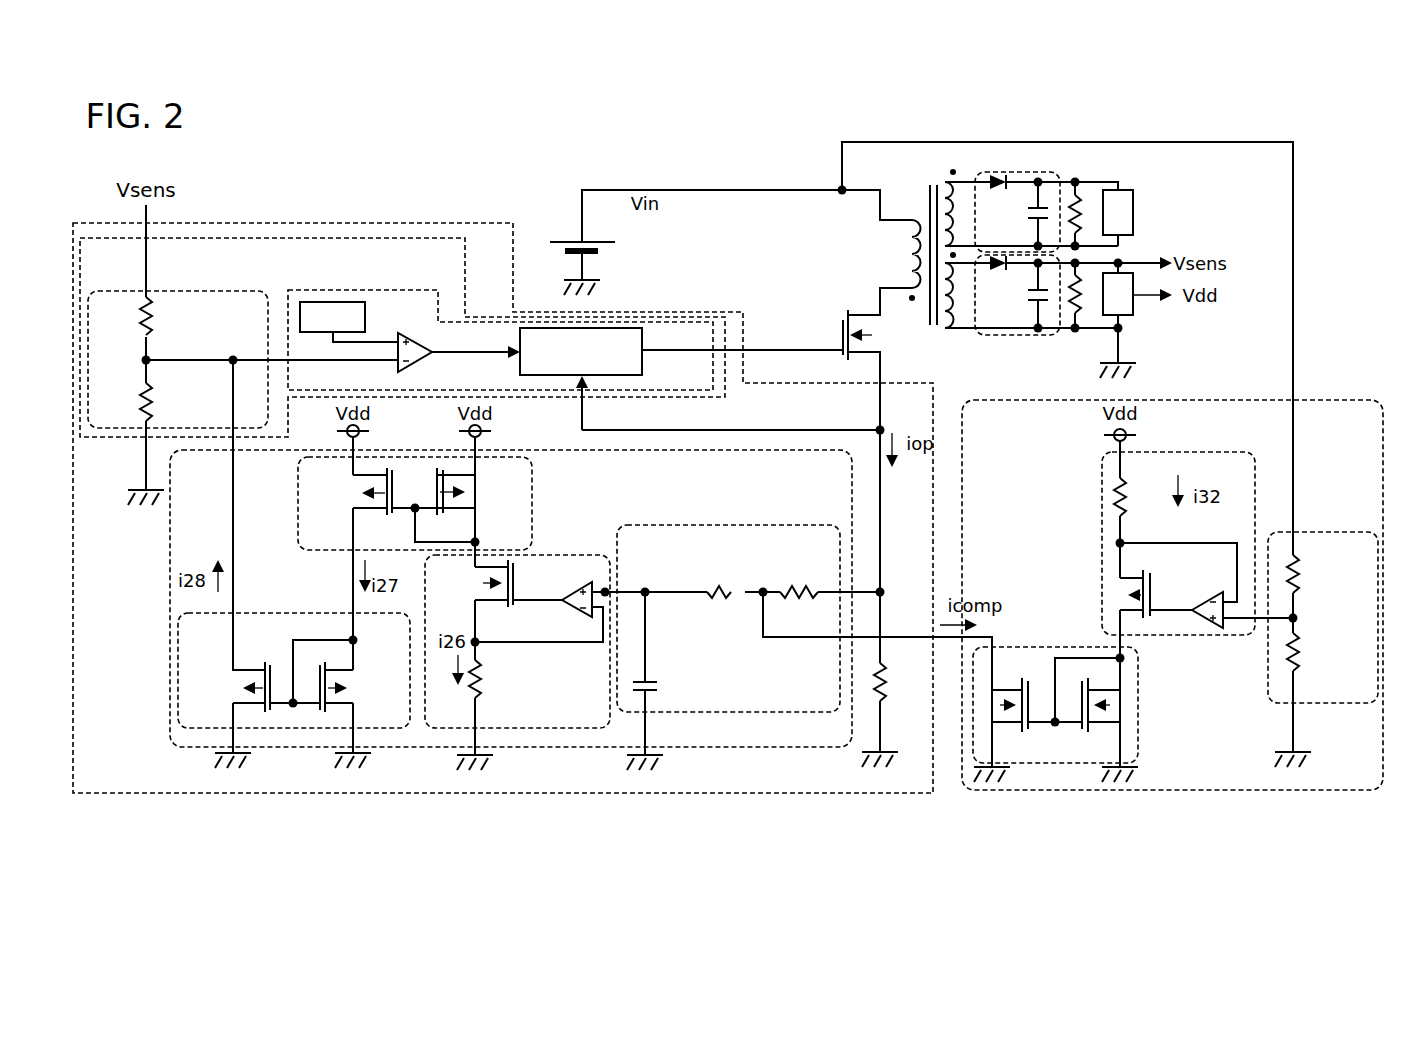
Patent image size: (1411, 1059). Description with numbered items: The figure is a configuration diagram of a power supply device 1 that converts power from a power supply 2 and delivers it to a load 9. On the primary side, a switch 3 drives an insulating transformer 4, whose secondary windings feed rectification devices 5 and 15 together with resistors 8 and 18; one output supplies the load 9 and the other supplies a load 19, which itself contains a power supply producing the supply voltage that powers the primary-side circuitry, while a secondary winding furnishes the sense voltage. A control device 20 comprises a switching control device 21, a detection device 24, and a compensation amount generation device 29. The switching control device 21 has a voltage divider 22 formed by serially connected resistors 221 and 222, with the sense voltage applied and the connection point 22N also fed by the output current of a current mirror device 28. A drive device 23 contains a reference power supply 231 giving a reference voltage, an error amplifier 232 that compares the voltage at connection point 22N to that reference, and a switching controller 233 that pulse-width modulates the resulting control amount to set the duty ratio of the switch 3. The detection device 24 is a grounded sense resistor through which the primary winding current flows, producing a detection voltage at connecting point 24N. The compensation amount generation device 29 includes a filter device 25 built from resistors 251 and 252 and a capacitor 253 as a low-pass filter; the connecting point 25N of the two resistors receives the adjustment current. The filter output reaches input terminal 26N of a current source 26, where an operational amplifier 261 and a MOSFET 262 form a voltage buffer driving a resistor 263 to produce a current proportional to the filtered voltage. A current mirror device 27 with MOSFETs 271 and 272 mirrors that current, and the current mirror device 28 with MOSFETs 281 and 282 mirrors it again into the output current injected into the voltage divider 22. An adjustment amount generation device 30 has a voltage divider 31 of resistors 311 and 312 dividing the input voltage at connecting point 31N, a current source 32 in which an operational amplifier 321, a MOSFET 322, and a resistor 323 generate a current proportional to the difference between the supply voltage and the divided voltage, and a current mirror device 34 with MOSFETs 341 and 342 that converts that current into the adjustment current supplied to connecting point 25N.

The power supply device 1 is at (606, 106).
The power supply 2 is at (568, 241).
The switch 3 is at (841, 332).
The insulating transformer 4 is at (899, 246).
The rectification device 5 is at (1010, 175).
The resistor 8 is at (1080, 208).
The load 9 is at (1134, 203).
The rectification device 15 is at (1010, 336).
The resistor 18 is at (1082, 316).
The load 19 is at (1134, 316).
The control device 20 is at (316, 223).
The switching control device 21 is at (487, 316).
The voltage divider 22 is at (180, 291).
The resistor 221 is at (142, 316).
The resistor 222 is at (140, 422).
The connection point 22N is at (231, 358).
The drive device 23 is at (385, 290).
The reference power supply 231 is at (366, 318).
The error amplifier 232 is at (438, 362).
The switching controller 233 is at (642, 370).
The detection device 24 is at (886, 703).
The connecting point 24N is at (884, 589).
The filter device 25 is at (640, 525).
The resistor 251 is at (800, 598).
The resistor 252 is at (729, 598).
The capacitor 253 is at (652, 680).
The connecting point 25N is at (764, 588).
The current source 26 is at (548, 553).
The operational amplifier 261 is at (580, 614).
The MOSFET 262 is at (480, 575).
The resistor 263 is at (482, 700).
The input terminal 26N is at (603, 589).
The current mirror device 27 is at (532, 465).
The MOSFET 271 is at (468, 493).
The MOSFET 272 is at (362, 490).
The current mirror device 28 is at (272, 612).
The MOSFET 281 is at (343, 682).
The MOSFET 282 is at (242, 684).
The compensation amount generation device 29 is at (170, 735).
The adjustment amount generation device 30 is at (1345, 400).
The voltage divider 31 is at (1340, 532).
The resistor 311 is at (1305, 566).
The resistor 312 is at (1303, 680).
The connecting point 31N is at (1300, 618).
The current source 32 is at (1102, 585).
The operational amplifier 321 is at (1200, 600).
The MOSFET 322 is at (1155, 582).
The resistor 323 is at (1113, 500).
The current mirror device 34 is at (1138, 700).
The MOSFET 341 is at (1105, 726).
The MOSFET 342 is at (1008, 726).